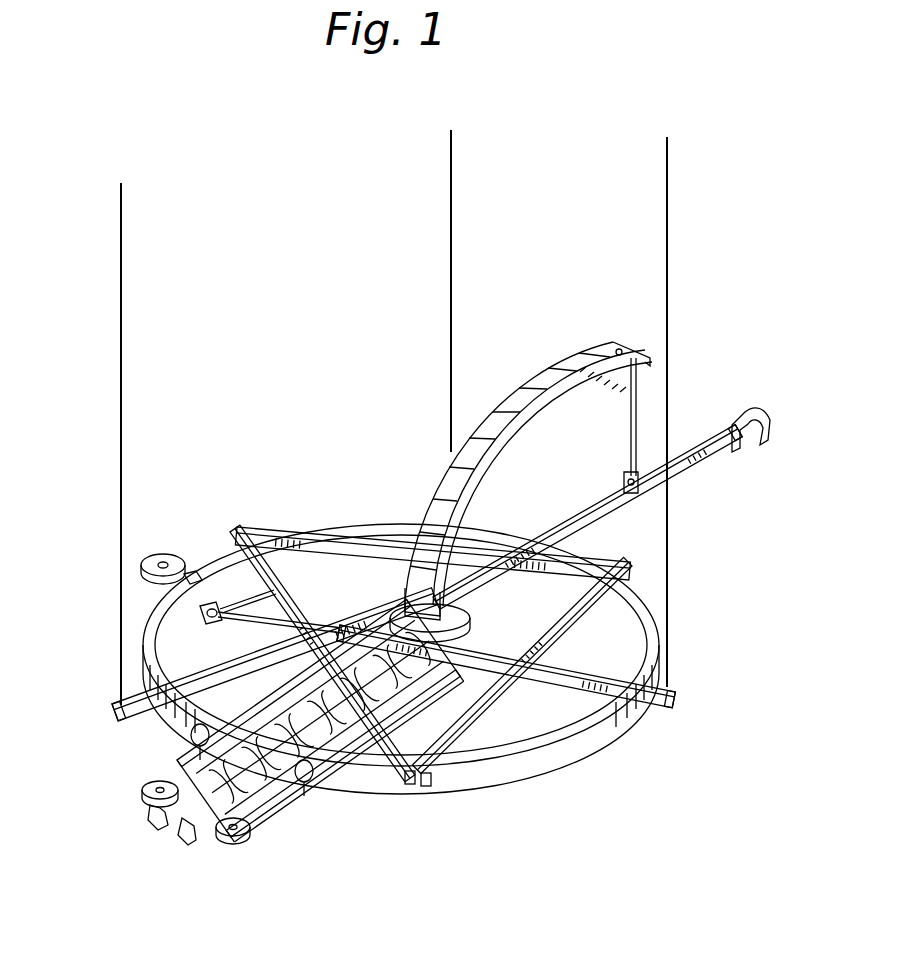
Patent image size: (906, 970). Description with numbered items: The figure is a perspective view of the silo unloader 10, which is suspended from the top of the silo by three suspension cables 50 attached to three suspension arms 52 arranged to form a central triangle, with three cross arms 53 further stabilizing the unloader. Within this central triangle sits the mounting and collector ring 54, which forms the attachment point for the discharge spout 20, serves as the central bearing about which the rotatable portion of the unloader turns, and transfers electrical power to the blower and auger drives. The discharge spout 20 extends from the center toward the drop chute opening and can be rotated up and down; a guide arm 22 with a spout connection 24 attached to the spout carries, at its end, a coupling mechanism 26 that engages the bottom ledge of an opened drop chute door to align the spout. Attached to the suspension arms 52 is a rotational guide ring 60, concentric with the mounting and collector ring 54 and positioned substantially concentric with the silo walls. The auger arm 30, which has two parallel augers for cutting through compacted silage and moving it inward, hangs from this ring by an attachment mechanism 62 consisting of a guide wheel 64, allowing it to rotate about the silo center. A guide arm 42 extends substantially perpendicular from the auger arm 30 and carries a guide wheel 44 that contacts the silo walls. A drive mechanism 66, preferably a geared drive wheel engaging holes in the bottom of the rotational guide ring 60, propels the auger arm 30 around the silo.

The silo unloader 10 is at (293, 437).
The discharge spout 20 is at (548, 385).
The guide arm 22 is at (595, 500).
The spout connection 24 is at (636, 428).
The coupling mechanism 26 is at (752, 415).
The auger arm 30 is at (292, 822).
The guide arm 42 is at (194, 572).
The guide wheel 44 is at (168, 553).
The suspension cables 50 is at (451, 222).
The suspension arms 52 is at (110, 713).
The cross arms 53 is at (301, 533).
The mounting and collector ring 54 is at (436, 637).
The rotational guide ring 60 is at (565, 755).
The attachment mechanism 62 is at (190, 739).
The guide wheel 64 is at (309, 781).
The drive mechanism 66 is at (199, 637).